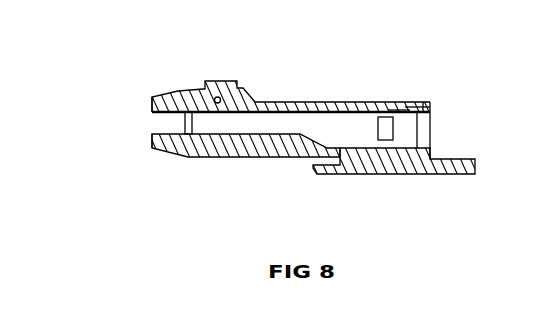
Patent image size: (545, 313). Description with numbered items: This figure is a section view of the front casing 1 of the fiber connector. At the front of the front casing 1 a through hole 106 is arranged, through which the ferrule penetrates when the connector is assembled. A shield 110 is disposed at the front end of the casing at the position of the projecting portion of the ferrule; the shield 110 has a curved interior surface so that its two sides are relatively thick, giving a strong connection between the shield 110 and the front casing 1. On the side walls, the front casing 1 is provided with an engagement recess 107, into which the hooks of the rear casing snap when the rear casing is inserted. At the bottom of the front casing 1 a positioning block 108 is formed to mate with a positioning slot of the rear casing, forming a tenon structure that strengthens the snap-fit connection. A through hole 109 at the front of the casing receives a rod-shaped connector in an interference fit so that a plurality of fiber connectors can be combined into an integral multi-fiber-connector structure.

The front casing 1 is at (272, 158).
The through hole 106 is at (187, 121).
The engagement recess 107 is at (396, 119).
The positioning block 108 is at (458, 173).
The through hole 109 is at (203, 86).
The shield 110 is at (152, 136).